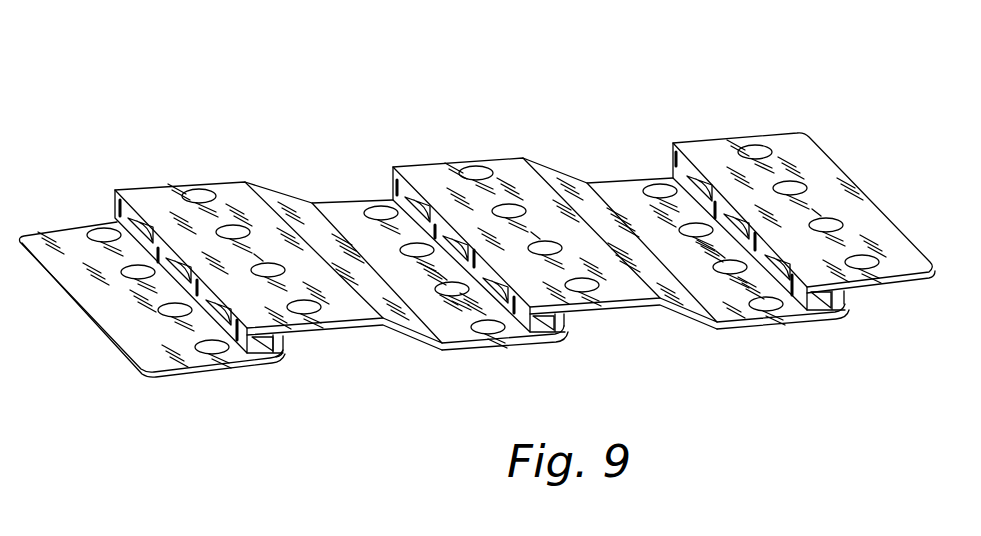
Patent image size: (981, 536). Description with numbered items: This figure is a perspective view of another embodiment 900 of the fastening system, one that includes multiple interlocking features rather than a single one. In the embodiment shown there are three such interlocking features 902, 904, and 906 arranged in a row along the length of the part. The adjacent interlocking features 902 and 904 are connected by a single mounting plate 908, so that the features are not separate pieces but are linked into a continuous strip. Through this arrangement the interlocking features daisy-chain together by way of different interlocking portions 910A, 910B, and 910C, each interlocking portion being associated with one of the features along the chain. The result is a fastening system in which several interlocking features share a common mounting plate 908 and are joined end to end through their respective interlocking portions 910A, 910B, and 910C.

The fastening system embodiment 900 is at (213, 88).
The interlocking feature 902 is at (276, 375).
The interlocking feature 904 is at (558, 352).
The interlocking feature 906 is at (830, 320).
The mounting plate 908 is at (436, 350).
The interlocking portion 910A is at (236, 190).
The interlocking portion 910B is at (510, 172).
The interlocking portion 910C is at (813, 142).